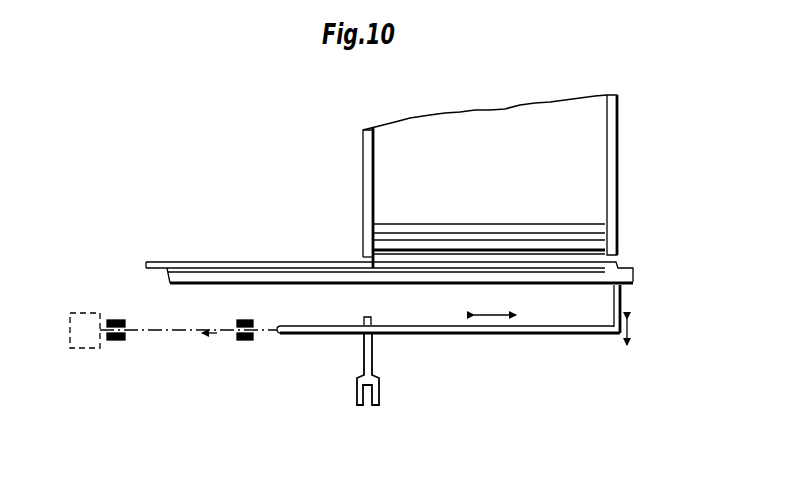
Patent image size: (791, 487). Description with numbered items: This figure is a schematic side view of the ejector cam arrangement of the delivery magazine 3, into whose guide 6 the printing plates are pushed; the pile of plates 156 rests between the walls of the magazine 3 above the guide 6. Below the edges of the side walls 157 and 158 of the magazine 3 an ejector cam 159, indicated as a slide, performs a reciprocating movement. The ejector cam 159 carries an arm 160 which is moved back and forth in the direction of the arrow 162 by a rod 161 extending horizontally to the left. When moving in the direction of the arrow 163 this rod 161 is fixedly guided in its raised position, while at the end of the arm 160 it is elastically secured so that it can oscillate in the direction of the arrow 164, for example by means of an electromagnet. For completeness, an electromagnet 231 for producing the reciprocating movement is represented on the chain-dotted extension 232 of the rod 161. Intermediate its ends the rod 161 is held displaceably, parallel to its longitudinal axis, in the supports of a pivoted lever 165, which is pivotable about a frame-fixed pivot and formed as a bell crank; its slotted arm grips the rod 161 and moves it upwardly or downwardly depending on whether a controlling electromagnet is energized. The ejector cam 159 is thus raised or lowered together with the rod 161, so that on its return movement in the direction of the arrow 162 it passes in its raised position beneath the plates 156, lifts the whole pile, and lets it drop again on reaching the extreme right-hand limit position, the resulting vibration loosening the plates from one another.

The magazine 3 is at (598, 157).
The guide 6 is at (256, 272).
The stack of sheets 156 is at (597, 240).
The side wall 157 is at (368, 170).
The side wall 158 is at (609, 191).
The ejector cam 159 is at (634, 283).
The arm 160 is at (621, 305).
The rod 161 is at (570, 334).
The arrow 162 is at (502, 318).
The arrow 163 is at (198, 334).
The arrow 164 is at (630, 333).
The pivoted lever 165 is at (366, 348).
The electromagnet 231 is at (84, 312).
The chain-dotted extension 232 is at (158, 329).